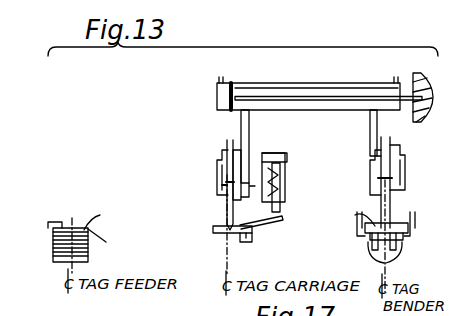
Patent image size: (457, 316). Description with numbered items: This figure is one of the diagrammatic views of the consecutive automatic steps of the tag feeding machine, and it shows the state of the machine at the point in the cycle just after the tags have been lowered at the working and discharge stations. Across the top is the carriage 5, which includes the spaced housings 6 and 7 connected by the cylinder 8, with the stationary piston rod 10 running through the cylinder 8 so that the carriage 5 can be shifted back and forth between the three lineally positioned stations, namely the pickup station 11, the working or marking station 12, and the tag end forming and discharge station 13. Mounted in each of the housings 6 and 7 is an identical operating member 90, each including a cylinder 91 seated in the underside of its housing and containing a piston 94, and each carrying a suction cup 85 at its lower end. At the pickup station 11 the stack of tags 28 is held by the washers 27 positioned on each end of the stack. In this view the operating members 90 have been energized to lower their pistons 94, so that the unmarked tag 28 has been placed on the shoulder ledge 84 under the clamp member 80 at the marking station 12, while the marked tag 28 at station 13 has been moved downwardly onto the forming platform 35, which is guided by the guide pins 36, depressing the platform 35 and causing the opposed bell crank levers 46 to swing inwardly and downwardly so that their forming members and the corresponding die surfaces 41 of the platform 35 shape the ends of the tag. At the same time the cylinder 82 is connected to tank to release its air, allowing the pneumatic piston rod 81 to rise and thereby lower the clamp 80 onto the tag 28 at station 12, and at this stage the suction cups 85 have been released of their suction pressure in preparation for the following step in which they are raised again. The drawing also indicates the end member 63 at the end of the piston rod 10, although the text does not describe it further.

The carriage 5 is at (320, 85).
The housing 6 is at (370, 131).
The housing 7 is at (250, 129).
The cylinder 8 is at (296, 66).
The piston rod 10 is at (352, 85).
The pickup station 11 is at (61, 219).
The working or marking station 12 is at (214, 276).
The tag end forming and discharge station 13 is at (368, 276).
The washer 27 is at (108, 243).
The tag 28 is at (214, 236).
The forming platform 35 is at (400, 245).
The guide pins 36 is at (401, 259).
The die surface 41 is at (366, 242).
The bell crank levers 46 is at (360, 228).
The hand knob 63 is at (424, 118).
The clamp member 80 is at (281, 224).
The pneumatic piston rod 81 is at (281, 208).
The cylinder 82 is at (287, 178).
The ledge or seat 84 is at (246, 243).
The vacuum cup 85 is at (214, 228).
The operating members 90 is at (217, 195).
The cylinder 91 is at (416, 172).
The piston 94 is at (218, 178).